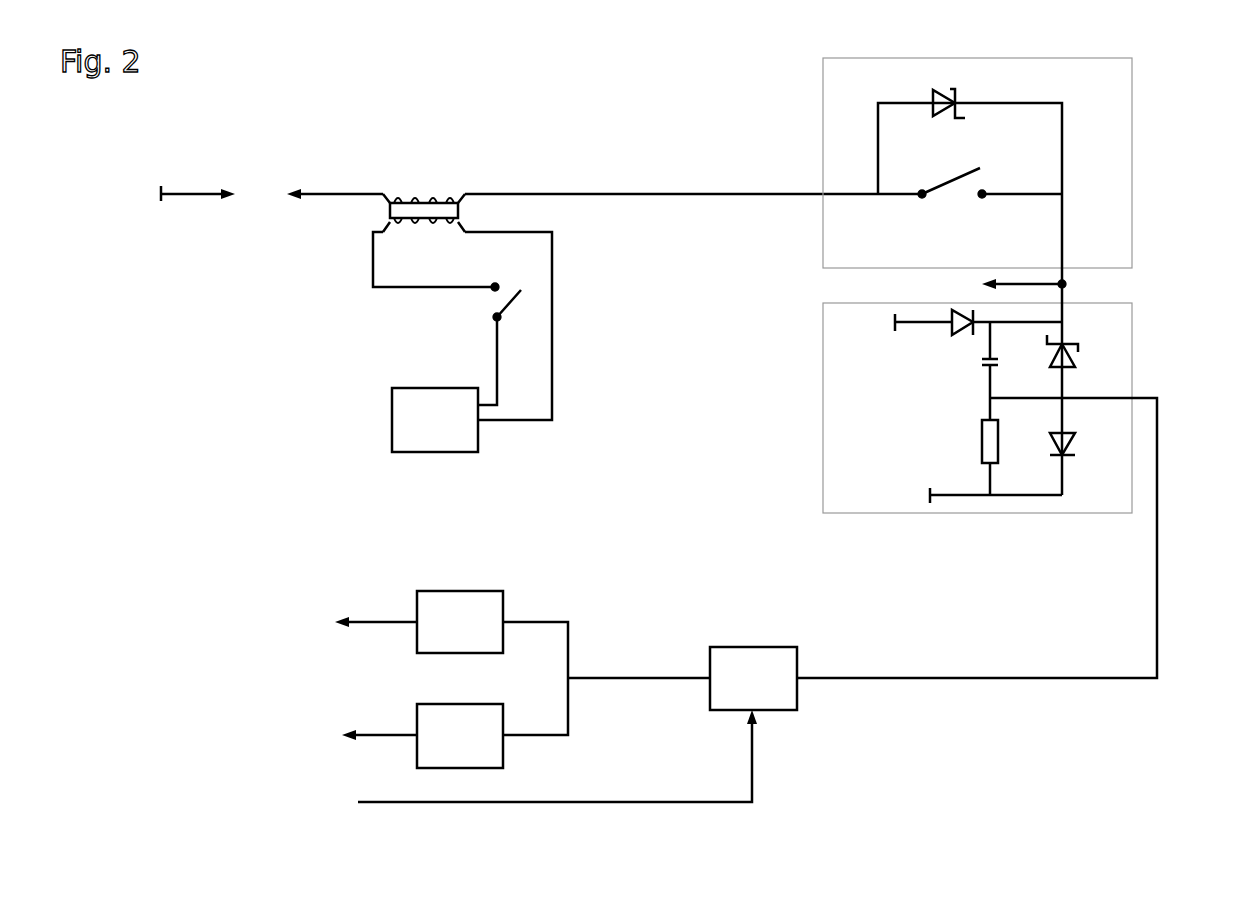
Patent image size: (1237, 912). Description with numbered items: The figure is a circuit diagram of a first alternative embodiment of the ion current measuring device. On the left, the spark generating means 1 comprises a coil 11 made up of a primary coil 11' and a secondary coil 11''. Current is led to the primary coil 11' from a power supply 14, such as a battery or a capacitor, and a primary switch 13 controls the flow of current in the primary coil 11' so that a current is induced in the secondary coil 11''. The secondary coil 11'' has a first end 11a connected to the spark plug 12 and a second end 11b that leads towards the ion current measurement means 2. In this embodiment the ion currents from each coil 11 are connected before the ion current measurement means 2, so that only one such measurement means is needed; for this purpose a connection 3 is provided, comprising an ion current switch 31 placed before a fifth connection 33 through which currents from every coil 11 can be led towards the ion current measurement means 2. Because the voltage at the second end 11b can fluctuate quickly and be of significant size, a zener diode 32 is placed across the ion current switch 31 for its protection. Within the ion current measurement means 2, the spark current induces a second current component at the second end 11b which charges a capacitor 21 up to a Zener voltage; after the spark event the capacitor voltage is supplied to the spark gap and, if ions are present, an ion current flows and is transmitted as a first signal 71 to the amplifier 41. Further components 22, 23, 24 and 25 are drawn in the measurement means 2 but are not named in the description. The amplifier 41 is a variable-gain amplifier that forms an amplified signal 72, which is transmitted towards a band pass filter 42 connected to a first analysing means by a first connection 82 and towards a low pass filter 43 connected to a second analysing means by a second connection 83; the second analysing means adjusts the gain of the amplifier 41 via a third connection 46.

The spark generating means 1 is at (421, 160).
The coil 11 is at (401, 176).
The primary coil 11' is at (439, 319).
The secondary coil 11'' is at (456, 166).
The first end 11a is at (337, 197).
The second end 11b is at (537, 192).
The spark plug 12 is at (250, 226).
The primary switch 13 is at (473, 317).
The power supply 14 is at (392, 432).
The ion current measurement means 2 is at (818, 389).
The capacitor 21 is at (973, 360).
The resistor 22 is at (972, 440).
The zener diode 23 is at (1100, 350).
The diode 24 is at (1085, 460).
The diode 25 is at (947, 342).
The connection 3 is at (818, 116).
The ion current switch 31 is at (945, 203).
The zener diode 32 is at (927, 76).
The fifth connection 33 is at (1040, 284).
The amplifier 41 is at (800, 713).
The band pass filter 42 is at (410, 586).
The low pass filter 43 is at (410, 698).
The third connection 46 is at (548, 808).
The first signal 71 is at (1162, 604).
The amplified signal 72 is at (633, 684).
The first connection 82 is at (332, 618).
The second connection 83 is at (340, 732).